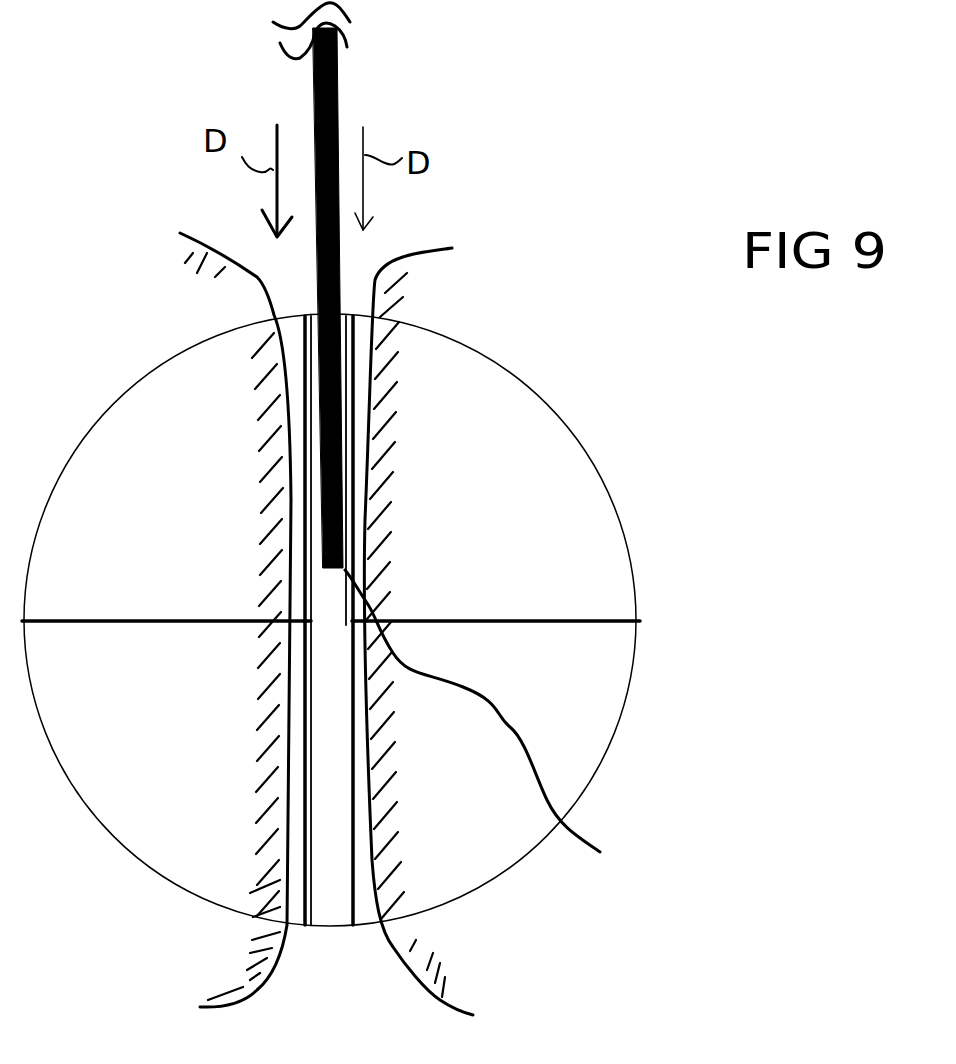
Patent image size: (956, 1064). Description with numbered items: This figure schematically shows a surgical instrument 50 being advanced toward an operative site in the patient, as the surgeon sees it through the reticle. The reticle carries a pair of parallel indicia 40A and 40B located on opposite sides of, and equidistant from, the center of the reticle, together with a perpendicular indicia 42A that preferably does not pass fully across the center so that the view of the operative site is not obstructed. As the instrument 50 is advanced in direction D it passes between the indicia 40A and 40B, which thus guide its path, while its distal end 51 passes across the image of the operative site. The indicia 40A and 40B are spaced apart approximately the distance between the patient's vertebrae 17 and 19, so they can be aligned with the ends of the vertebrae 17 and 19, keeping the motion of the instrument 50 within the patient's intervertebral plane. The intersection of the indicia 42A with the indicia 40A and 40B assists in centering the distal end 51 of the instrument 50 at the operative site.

The surgical instrument 50 is at (338, 97).
The vertebra 17 is at (217, 247).
The vertebra 19 is at (415, 250).
The parallel indicia 40A is at (302, 466).
The parallel indicia 40B is at (353, 453).
The perpendicular indicia 42A is at (507, 612).
The distal end 51 is at (497, 730).